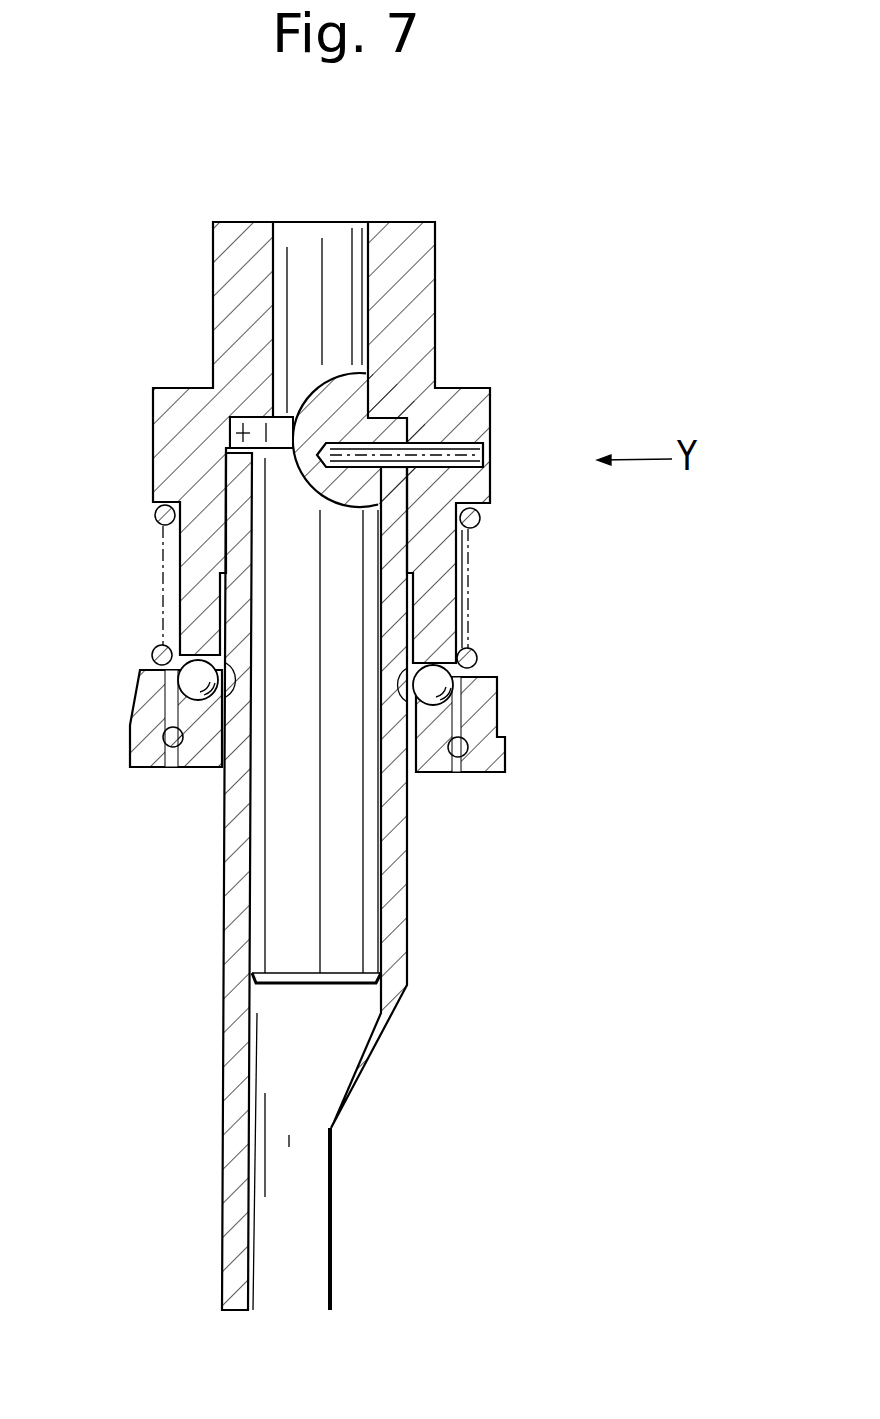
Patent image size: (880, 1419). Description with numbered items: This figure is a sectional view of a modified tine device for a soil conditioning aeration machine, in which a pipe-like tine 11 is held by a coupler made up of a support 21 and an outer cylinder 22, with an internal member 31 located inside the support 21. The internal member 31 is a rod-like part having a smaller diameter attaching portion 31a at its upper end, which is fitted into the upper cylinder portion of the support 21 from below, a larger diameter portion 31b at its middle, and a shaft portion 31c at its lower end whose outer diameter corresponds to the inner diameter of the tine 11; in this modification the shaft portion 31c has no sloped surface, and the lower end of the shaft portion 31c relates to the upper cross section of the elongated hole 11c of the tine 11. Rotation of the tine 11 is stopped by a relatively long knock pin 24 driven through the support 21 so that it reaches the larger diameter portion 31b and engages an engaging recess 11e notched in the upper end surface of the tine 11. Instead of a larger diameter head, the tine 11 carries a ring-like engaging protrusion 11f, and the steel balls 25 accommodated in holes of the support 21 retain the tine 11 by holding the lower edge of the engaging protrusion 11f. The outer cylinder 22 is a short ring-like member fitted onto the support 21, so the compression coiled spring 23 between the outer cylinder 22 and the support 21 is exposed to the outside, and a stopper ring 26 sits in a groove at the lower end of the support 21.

The internal member 31 is at (233, 546).
The attaching portion 31a is at (295, 300).
The larger diameter portion 31b is at (252, 437).
The shaft portion 31c is at (278, 915).
The support 21 is at (417, 288).
The knock pin 24 is at (492, 453).
The coiled spring 23 is at (472, 565).
The steel balls 25 is at (197, 682).
The outer cylinder 22 is at (487, 755).
The stopper ring 26 is at (467, 765).
The tine 11 is at (262, 881).
The engaging recess 11e is at (381, 462).
The engaging protrusion 11f is at (232, 668).
The elongated hole 11c is at (328, 1213).